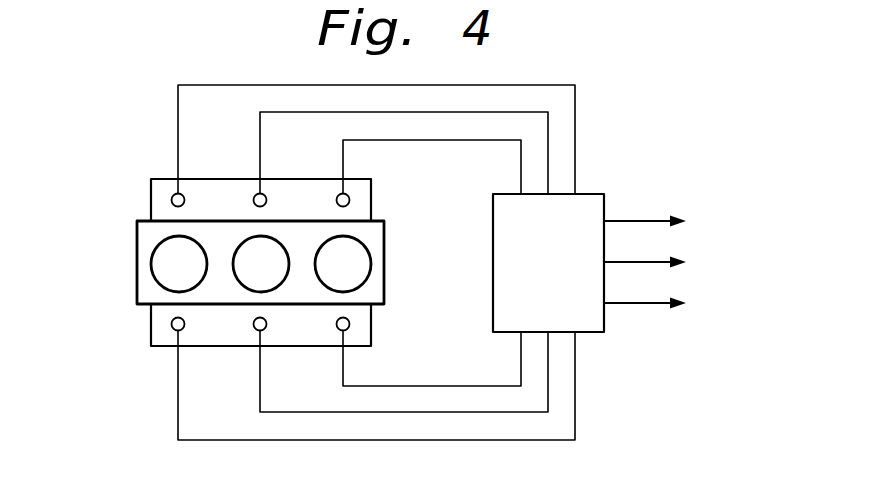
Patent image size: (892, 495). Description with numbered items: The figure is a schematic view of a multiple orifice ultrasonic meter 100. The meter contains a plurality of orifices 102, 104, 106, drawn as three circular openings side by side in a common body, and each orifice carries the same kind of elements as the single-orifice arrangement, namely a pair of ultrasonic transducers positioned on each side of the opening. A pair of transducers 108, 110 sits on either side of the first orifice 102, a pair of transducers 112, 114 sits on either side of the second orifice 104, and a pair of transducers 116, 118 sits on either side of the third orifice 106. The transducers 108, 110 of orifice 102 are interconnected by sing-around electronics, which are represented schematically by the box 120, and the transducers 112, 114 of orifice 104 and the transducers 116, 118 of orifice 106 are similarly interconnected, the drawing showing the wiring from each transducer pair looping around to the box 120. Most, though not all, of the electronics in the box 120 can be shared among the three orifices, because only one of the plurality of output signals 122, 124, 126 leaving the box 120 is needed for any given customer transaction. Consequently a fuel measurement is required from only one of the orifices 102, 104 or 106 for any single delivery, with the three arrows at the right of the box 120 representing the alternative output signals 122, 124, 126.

The multiple orifice ultrasonic meter 100 is at (116, 248).
The orifice 102 is at (152, 265).
The orifice 104 is at (280, 280).
The orifice 106 is at (372, 264).
The transducer 108 is at (170, 200).
The transducer 110 is at (170, 324).
The transducer 112 is at (254, 196).
The transducer 114 is at (254, 329).
The transducer 116 is at (350, 200).
The transducer 118 is at (350, 324).
The box 120 is at (576, 278).
The output signal 122 is at (640, 220).
The output signal 124 is at (650, 262).
The output signal 126 is at (640, 305).